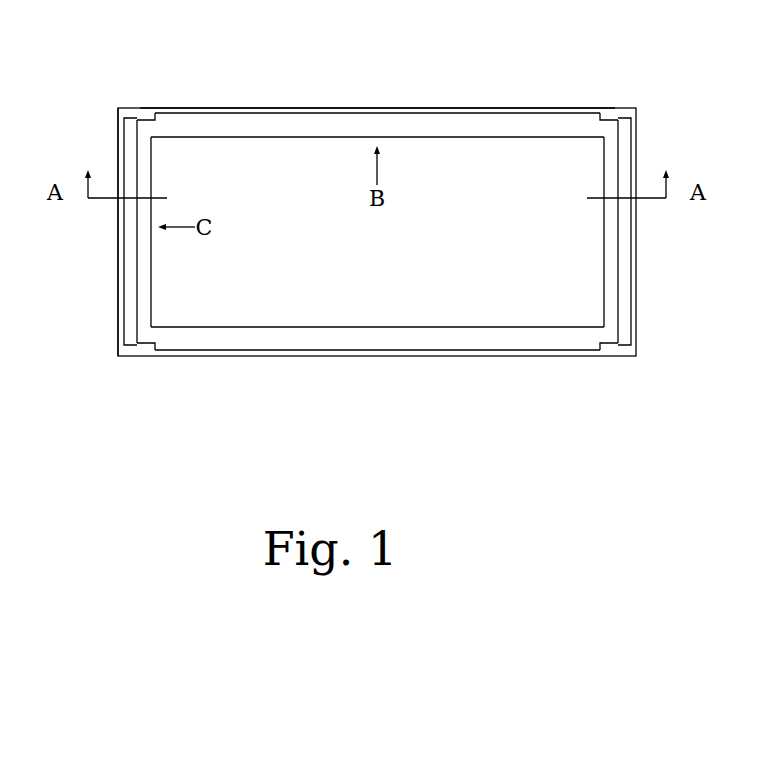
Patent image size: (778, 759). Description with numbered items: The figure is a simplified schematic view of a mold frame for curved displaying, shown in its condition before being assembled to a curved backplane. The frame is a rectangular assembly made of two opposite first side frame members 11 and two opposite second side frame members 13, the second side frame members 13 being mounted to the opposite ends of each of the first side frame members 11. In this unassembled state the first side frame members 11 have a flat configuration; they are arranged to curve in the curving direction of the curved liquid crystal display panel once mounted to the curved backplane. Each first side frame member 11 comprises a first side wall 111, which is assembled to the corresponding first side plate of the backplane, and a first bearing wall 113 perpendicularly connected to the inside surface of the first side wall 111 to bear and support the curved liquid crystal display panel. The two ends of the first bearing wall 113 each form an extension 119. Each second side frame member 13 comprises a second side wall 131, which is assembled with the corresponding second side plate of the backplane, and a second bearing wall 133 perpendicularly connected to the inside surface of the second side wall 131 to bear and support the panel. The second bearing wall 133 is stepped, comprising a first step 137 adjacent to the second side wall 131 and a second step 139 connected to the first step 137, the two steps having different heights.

The first side frame member 11 is at (385, 69).
The first side wall 111 is at (408, 110).
The first bearing wall 113 is at (295, 130).
The extension 119 is at (609, 128).
The second side frame member 13 is at (339, 212).
The second side wall 131 is at (118, 288).
The second bearing wall 133 is at (149, 280).
The first step 137 is at (128, 322).
The second step 139 is at (143, 298).